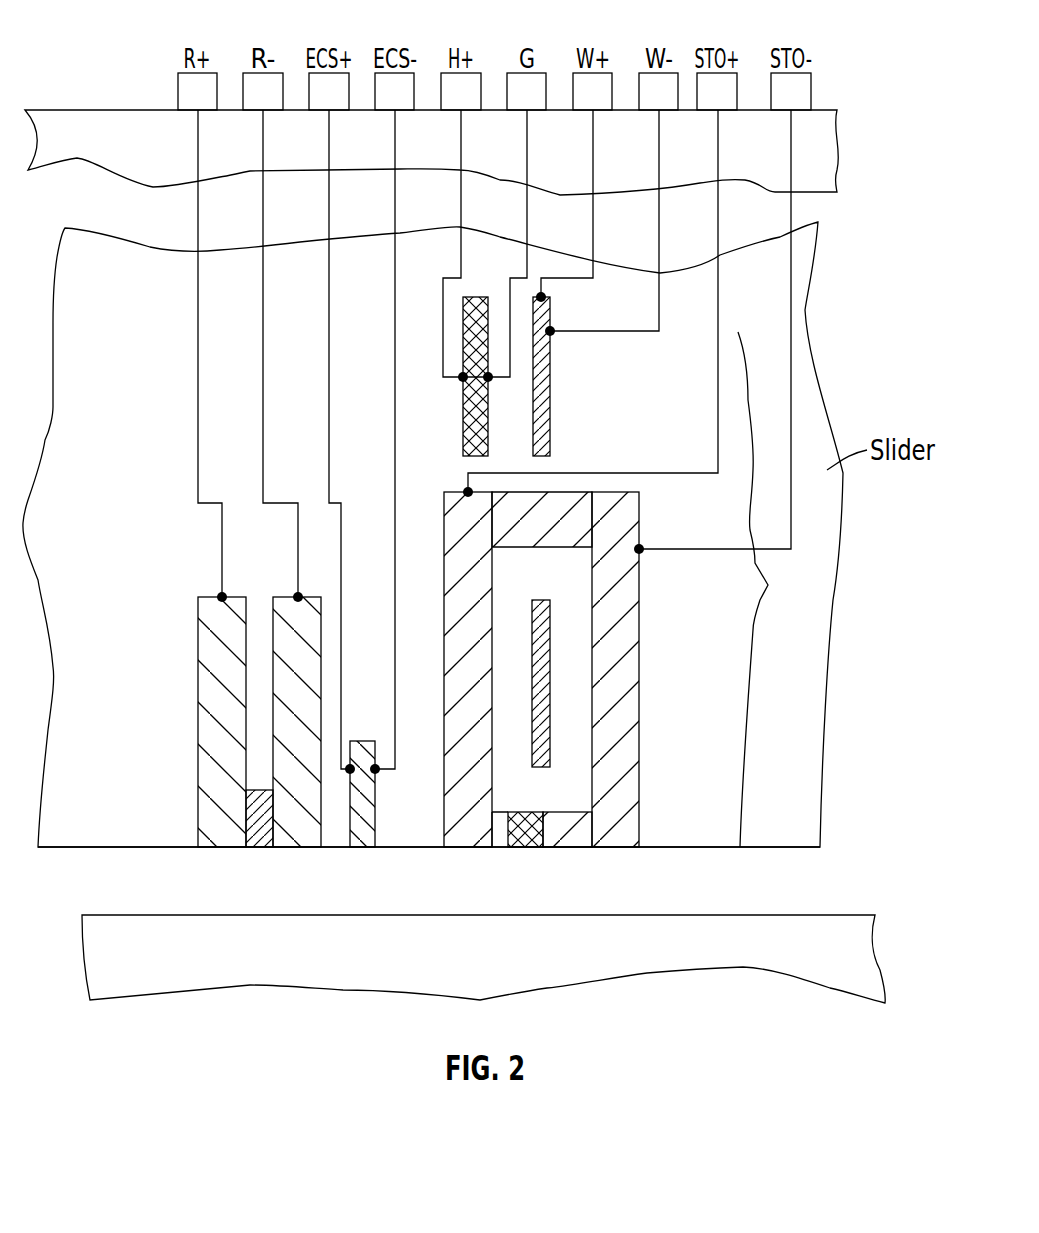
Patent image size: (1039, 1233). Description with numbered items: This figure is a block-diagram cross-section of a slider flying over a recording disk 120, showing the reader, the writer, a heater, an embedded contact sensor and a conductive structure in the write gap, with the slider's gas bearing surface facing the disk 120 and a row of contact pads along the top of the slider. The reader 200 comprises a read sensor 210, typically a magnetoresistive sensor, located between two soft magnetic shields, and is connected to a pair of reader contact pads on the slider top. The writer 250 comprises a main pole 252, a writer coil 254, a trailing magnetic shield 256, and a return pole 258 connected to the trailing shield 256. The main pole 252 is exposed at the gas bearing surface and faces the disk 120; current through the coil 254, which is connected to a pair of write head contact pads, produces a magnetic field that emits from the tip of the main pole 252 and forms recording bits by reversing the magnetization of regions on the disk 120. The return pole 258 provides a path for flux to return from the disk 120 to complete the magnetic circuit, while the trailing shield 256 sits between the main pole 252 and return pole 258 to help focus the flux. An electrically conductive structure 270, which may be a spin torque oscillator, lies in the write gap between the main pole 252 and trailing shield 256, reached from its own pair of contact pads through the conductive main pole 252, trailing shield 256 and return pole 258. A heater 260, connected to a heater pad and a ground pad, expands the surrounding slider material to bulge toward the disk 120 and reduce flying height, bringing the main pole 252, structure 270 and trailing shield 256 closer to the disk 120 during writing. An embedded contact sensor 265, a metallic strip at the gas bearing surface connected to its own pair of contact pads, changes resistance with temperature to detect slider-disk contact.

The disk 120 is at (857, 957).
The reader 200 is at (214, 719).
The read sensor 210 is at (272, 850).
The writer 250 is at (433, 534).
The main pole 252 is at (473, 840).
The writer coil 254 is at (547, 383).
The trailing magnetic shield 256 is at (587, 840).
The return pole 258 is at (628, 625).
The heater 260 is at (475, 423).
The embedded contact sensor 265 is at (362, 850).
The electrically conductive structure 270 is at (520, 848).